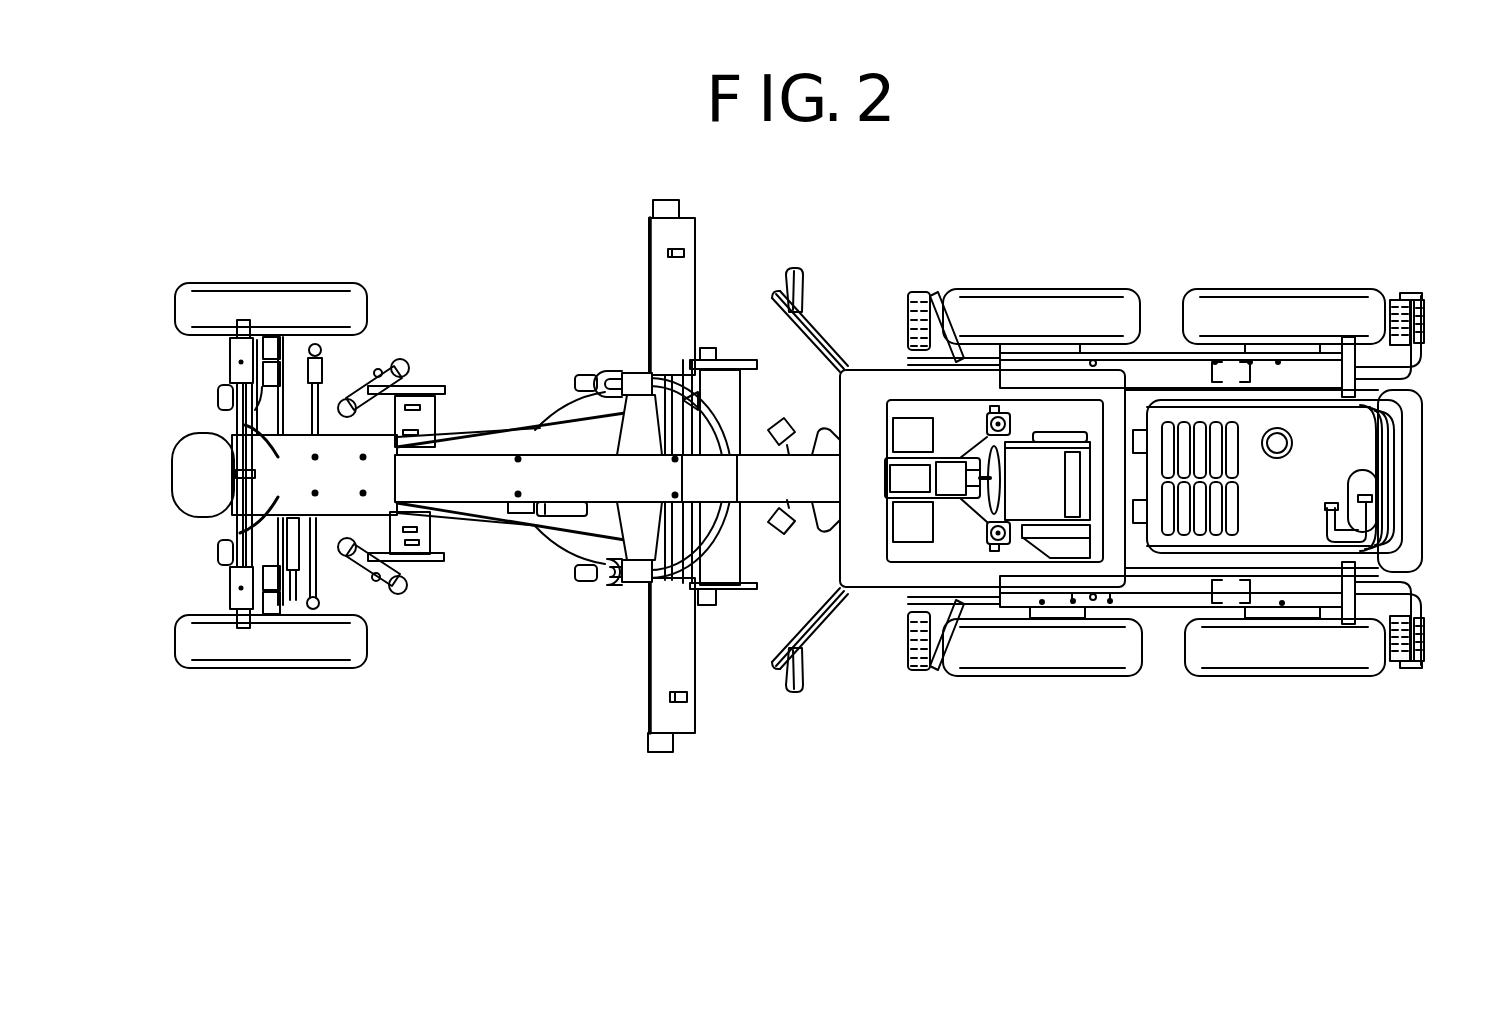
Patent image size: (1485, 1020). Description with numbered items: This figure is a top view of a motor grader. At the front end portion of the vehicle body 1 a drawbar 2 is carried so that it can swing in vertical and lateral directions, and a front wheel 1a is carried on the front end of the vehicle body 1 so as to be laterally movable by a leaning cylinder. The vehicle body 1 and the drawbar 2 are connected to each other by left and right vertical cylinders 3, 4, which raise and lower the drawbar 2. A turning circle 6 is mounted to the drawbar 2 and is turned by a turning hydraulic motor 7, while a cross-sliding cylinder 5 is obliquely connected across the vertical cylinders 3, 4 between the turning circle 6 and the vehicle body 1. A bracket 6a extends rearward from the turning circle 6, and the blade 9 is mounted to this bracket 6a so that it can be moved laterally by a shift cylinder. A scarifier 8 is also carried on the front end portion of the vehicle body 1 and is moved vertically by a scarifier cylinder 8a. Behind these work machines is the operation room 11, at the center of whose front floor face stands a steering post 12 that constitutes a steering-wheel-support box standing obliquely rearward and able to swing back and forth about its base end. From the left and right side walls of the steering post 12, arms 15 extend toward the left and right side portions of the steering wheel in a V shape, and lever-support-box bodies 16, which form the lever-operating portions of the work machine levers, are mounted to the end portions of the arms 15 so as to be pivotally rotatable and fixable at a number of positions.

The vehicle body 1 is at (527, 466).
The front wheel 1a is at (310, 303).
The drawbar 2 is at (520, 516).
The vertical cylinder 3 is at (592, 572).
The vertical cylinder 4 is at (582, 378).
The cross-sliding cylinder 5 is at (678, 520).
The turning circle 6 is at (568, 548).
The bracket 6a is at (722, 588).
The turning hydraulic motor 7 is at (506, 505).
The scarifier 8 is at (428, 578).
The scarifier cylinder 8a is at (372, 372).
The blade 9 is at (650, 742).
The operation room 11 is at (872, 360).
The steering post 12 is at (886, 490).
The arms 15 is at (987, 437).
The lever-support-box bodies 16 is at (997, 410).